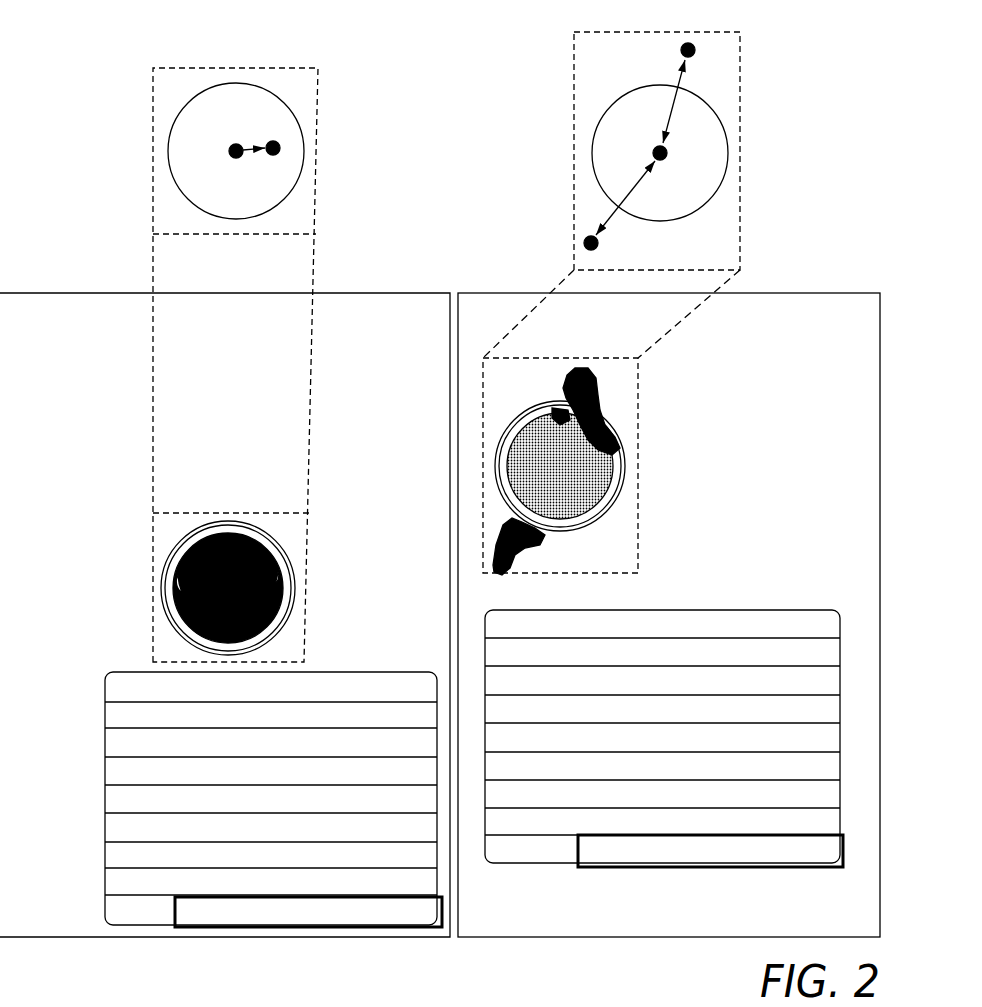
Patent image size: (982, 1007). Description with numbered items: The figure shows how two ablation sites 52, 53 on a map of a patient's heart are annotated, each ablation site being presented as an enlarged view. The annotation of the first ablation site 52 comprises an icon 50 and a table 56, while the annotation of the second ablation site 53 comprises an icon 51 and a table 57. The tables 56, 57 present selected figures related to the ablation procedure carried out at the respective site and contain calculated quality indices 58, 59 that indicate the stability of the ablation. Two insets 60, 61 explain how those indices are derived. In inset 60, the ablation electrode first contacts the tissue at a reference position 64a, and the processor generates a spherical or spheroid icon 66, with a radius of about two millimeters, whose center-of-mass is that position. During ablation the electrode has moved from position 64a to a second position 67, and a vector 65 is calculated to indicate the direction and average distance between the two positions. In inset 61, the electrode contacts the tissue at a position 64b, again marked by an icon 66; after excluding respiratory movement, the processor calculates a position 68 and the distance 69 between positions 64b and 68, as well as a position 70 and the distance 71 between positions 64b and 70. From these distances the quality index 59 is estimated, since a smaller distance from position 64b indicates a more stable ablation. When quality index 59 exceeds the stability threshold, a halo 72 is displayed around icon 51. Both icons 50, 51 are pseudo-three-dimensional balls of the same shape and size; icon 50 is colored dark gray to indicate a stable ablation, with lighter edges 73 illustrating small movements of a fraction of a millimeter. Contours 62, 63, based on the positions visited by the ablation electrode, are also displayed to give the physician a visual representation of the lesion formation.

The icon 50 is at (168, 532).
The icon 51 is at (533, 375).
The ablation site 52 is at (348, 437).
The ablation site 53 is at (690, 397).
The table 56 is at (380, 647).
The table 57 is at (783, 587).
The quality index 58 is at (443, 920).
The quality index 59 is at (577, 855).
The inset 60 is at (153, 200).
The inset 61 is at (743, 35).
The contour 62 is at (590, 372).
The contour 63 is at (497, 560).
The position 64a is at (229, 150).
The position 64b is at (667, 153).
The vector 65 is at (252, 155).
The icon 66 is at (173, 118).
The position 67 is at (281, 148).
The position 68 is at (696, 50).
The distance 69 is at (677, 110).
The position 70 is at (587, 238).
The distance 71 is at (637, 190).
The halo 72 is at (623, 440).
The edges 73 is at (177, 577).